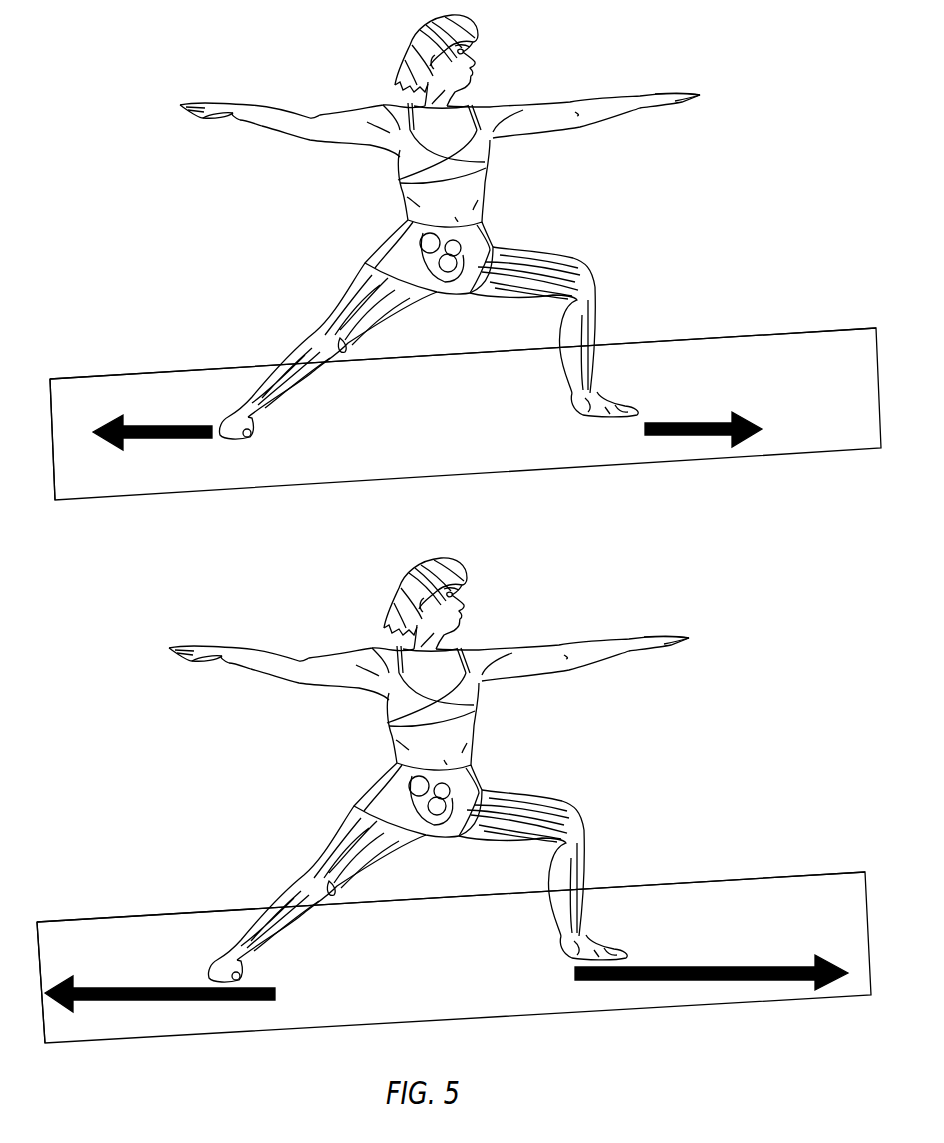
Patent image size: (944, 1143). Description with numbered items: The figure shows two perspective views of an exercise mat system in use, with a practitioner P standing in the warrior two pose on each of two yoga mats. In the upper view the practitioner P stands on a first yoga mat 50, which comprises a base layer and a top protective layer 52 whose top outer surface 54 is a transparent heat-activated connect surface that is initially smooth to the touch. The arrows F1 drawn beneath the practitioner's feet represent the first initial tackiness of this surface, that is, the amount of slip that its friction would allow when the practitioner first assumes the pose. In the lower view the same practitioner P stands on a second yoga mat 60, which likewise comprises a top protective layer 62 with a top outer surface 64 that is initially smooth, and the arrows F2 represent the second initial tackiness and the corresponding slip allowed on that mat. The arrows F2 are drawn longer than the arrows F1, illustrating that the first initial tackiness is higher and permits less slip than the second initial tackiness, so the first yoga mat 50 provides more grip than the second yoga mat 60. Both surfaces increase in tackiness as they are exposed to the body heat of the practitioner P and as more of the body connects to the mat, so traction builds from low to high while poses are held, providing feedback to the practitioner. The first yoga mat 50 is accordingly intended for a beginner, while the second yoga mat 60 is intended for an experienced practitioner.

The practitioner P is at (485, 210).
The first yoga mat 50 is at (757, 293).
The top protective layer 52 is at (652, 353).
The top outer surface 54 is at (155, 407).
The arrows representing first initial tackiness F1 is at (170, 440).
The second yoga mat 60 is at (745, 835).
The top protective layer 62 is at (640, 900).
The top outer surface 64 is at (142, 952).
The arrows representing second initial tackiness F2 is at (188, 1003).